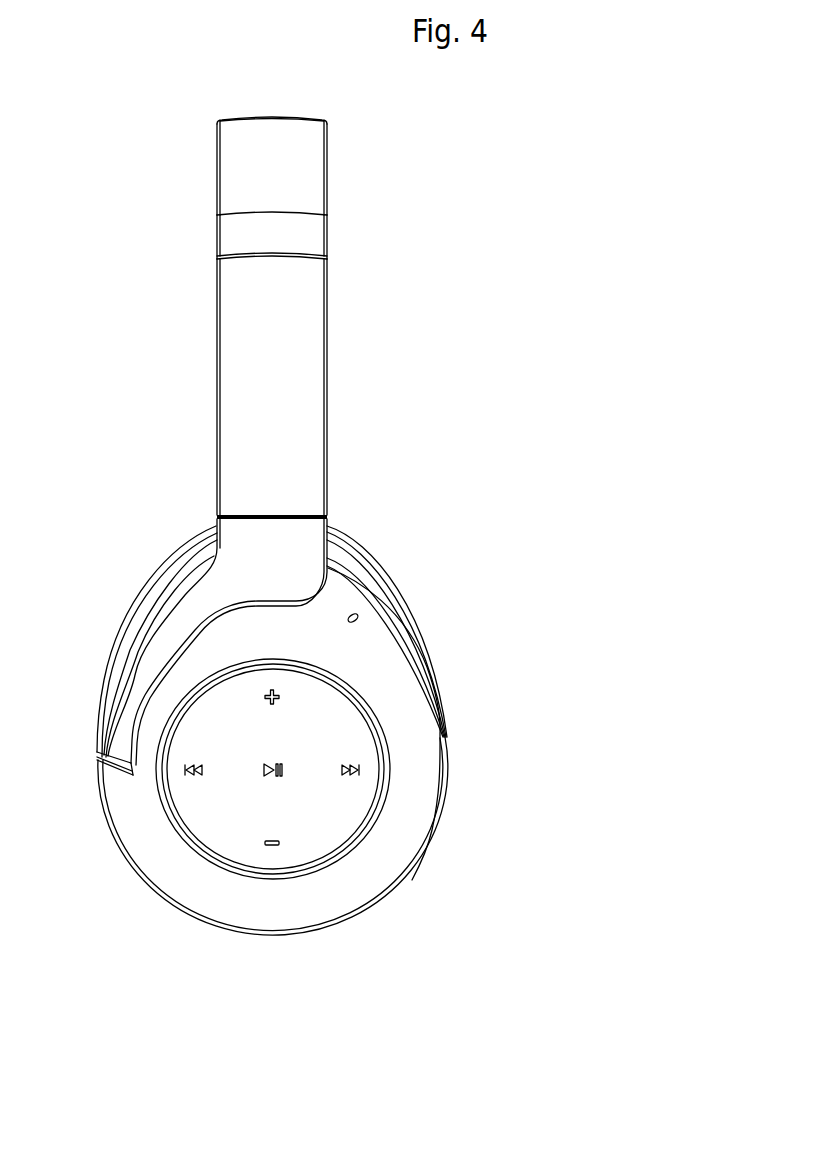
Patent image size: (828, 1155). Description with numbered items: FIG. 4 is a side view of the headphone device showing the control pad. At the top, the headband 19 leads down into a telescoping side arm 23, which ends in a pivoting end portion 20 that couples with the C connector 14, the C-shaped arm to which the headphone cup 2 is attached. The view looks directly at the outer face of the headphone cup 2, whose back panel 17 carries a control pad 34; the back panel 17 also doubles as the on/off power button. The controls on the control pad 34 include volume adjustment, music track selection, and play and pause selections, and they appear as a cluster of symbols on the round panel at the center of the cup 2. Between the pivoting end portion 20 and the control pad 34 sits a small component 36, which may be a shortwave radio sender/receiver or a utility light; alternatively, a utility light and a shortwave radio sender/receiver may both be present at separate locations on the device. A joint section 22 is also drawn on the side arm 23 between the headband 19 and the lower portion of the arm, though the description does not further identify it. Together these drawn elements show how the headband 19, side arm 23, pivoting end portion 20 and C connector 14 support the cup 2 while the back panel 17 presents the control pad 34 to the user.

The headphone cup 2 is at (375, 865).
The C arm 14 is at (163, 620).
The back panel 17 is at (215, 863).
The headband 19 is at (303, 138).
The pivoting end portion 20 is at (313, 550).
The slider joint 22 is at (327, 257).
The telescoping side arm 23 is at (303, 445).
The control pad 34 is at (190, 820).
The component 36 is at (357, 616).